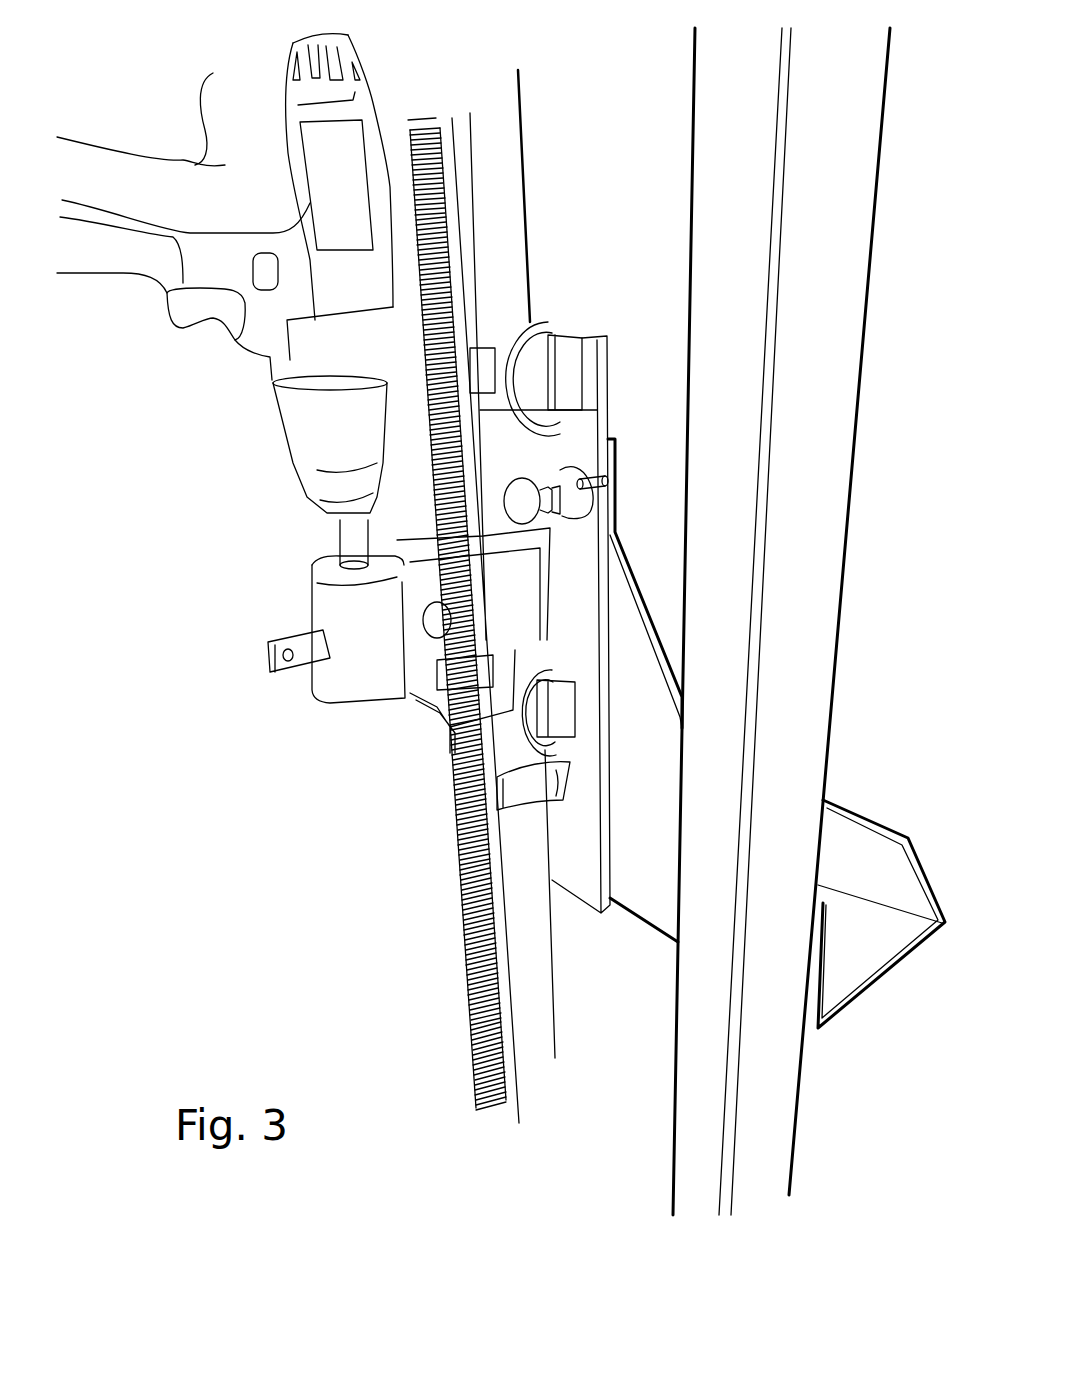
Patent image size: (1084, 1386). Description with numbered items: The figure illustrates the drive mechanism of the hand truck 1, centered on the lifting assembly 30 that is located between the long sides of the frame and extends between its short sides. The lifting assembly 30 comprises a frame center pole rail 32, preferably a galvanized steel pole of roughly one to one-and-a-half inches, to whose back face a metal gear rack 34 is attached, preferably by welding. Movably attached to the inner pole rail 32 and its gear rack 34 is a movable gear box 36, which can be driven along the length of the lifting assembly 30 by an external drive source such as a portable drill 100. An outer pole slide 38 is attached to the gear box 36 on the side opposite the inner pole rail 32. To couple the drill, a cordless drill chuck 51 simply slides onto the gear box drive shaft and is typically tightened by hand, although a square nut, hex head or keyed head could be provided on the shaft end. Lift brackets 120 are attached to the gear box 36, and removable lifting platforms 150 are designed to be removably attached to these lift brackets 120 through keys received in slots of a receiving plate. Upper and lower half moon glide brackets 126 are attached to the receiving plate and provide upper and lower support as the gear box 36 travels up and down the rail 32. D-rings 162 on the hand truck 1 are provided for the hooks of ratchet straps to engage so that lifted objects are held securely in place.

The hand truck 1 is at (885, 470).
The lifting assembly 30 is at (360, 773).
The frame center pole rail 32 is at (500, 218).
The gear rack 34 is at (445, 182).
The movable gear box 36 is at (330, 610).
The outer pole slide 38 is at (437, 640).
The cordless drill chuck 51 is at (340, 545).
The portable drill 100 is at (218, 267).
The lift bracket 120 is at (575, 880).
The half moon glide bracket 126 is at (483, 373).
The removable lifting platform 150 is at (632, 890).
The D-ring 162 is at (545, 325).